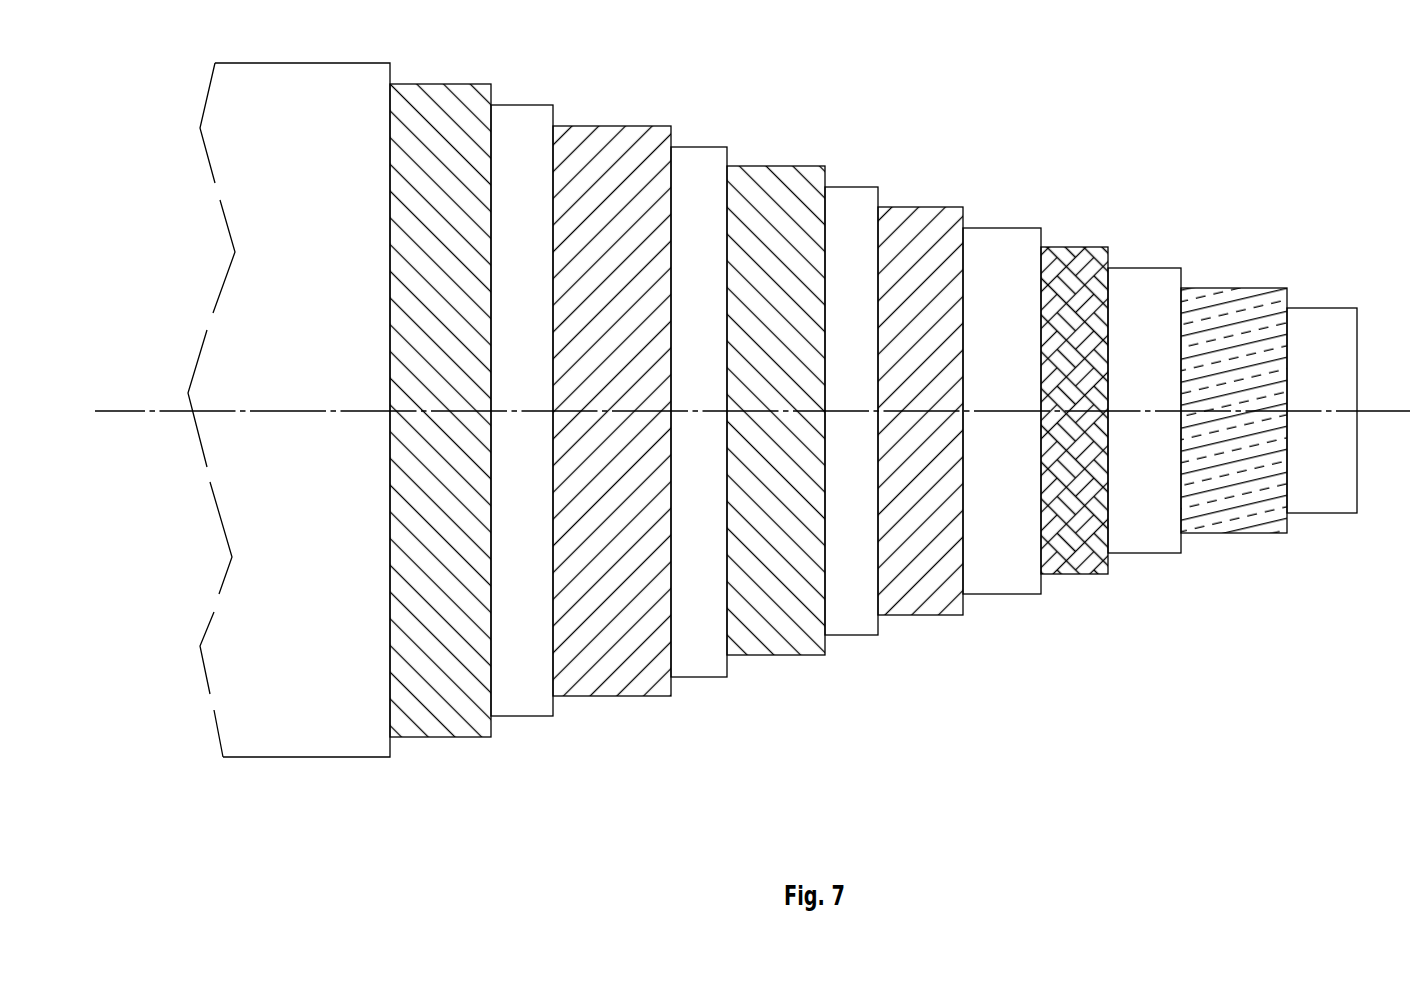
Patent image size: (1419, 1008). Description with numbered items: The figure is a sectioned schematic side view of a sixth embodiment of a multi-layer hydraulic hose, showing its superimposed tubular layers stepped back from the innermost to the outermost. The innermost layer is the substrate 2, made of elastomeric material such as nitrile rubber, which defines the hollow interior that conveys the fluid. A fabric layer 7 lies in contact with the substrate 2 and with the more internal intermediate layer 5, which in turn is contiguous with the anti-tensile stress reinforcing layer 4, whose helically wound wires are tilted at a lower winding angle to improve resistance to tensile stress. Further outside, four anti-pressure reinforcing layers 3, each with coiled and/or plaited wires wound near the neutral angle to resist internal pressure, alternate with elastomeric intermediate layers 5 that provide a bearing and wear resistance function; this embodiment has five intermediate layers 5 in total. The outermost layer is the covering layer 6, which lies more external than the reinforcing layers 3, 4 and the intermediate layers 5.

The substrate 2 is at (1330, 332).
The anti-pressure reinforcing layer 3 is at (1028, 693).
The anti-tensile stress reinforcing layer 4 is at (1075, 565).
The intermediate layer 5 is at (1156, 277).
The covering layer 6 is at (275, 744).
The fabric layer 7 is at (1227, 522).